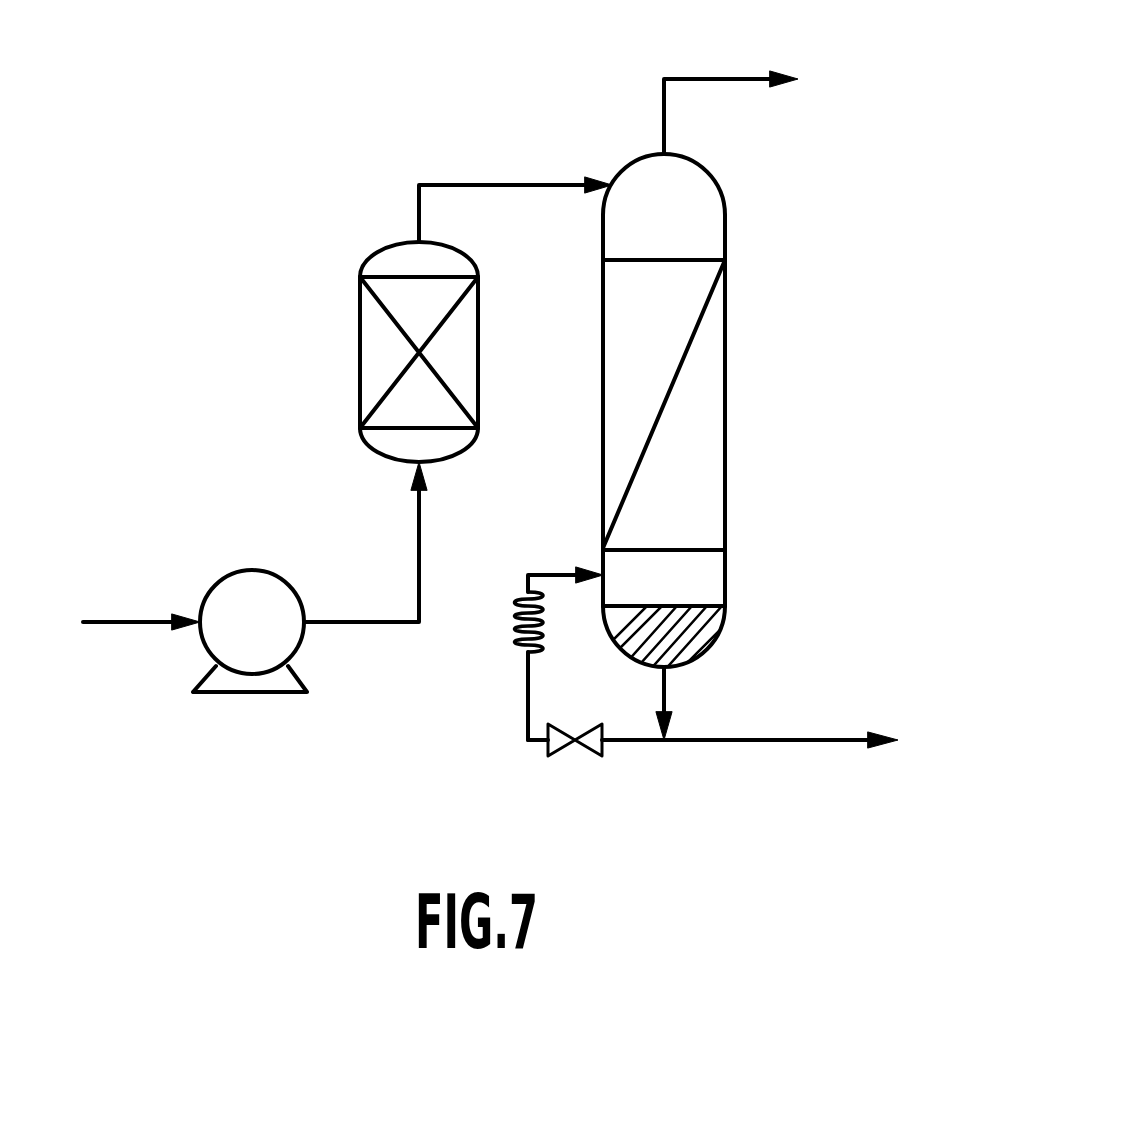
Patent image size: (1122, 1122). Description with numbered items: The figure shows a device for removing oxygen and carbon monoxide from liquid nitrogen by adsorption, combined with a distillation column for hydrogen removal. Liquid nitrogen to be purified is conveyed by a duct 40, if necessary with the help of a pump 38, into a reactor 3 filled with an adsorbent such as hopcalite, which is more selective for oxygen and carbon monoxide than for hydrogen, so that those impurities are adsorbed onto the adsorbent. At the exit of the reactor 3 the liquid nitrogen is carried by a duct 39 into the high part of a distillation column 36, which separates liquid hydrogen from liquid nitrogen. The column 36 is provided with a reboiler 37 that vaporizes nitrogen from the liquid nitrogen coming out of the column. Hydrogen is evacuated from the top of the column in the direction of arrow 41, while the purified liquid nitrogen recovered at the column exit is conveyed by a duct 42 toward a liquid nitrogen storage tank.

The reactor 3 is at (360, 372).
The distillation column 36 is at (725, 392).
The reboiler 37 is at (516, 612).
The pump 38 is at (278, 683).
The duct 39 is at (525, 183).
The duct 40 is at (148, 562).
The arrow 41 is at (680, 30).
The duct 42 is at (743, 741).